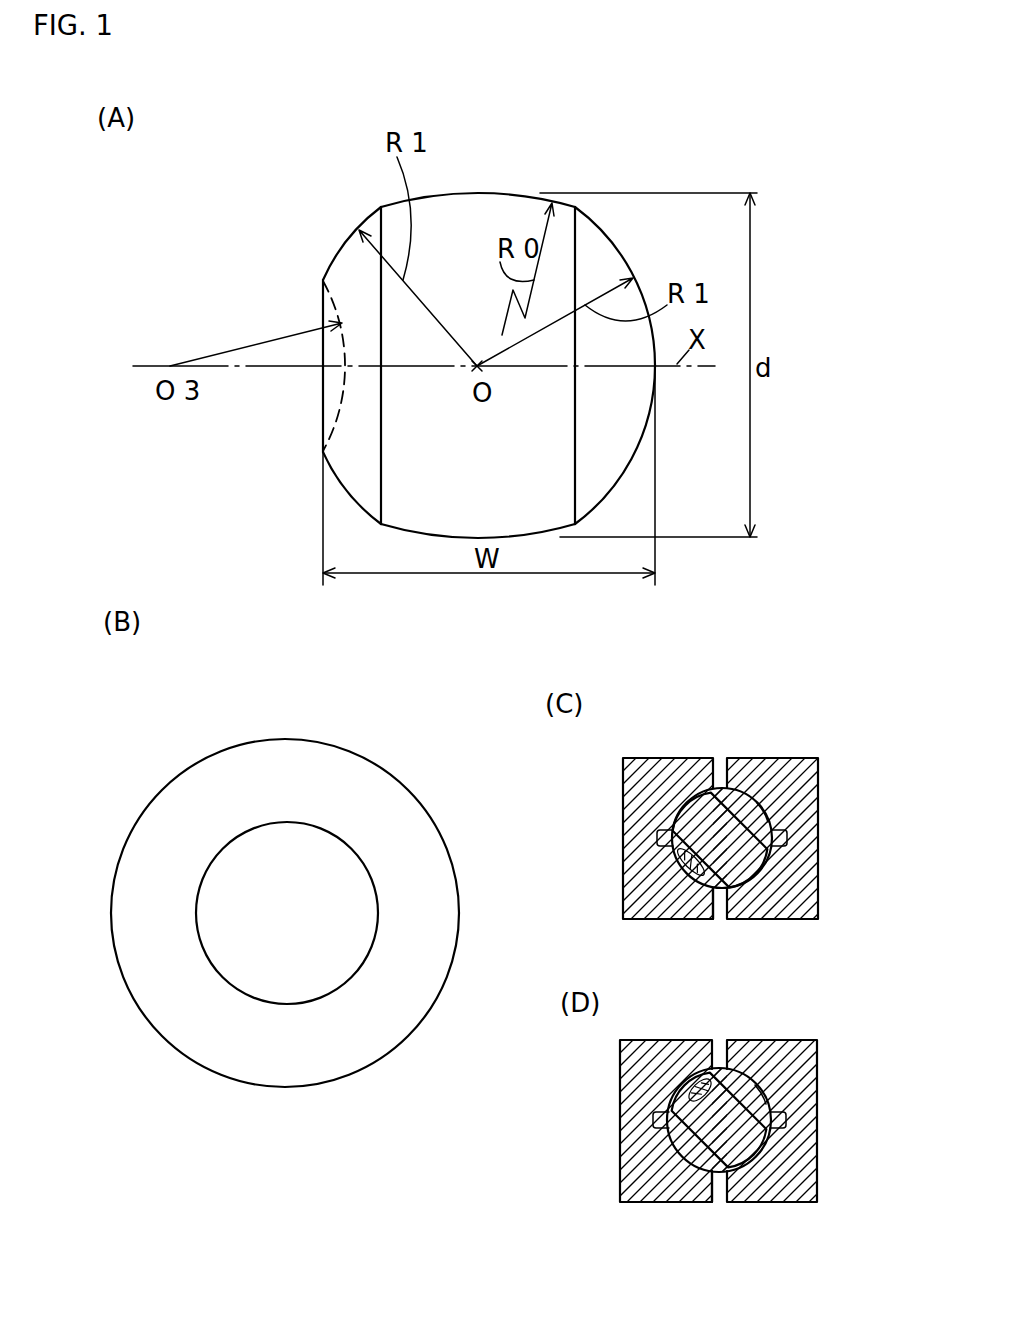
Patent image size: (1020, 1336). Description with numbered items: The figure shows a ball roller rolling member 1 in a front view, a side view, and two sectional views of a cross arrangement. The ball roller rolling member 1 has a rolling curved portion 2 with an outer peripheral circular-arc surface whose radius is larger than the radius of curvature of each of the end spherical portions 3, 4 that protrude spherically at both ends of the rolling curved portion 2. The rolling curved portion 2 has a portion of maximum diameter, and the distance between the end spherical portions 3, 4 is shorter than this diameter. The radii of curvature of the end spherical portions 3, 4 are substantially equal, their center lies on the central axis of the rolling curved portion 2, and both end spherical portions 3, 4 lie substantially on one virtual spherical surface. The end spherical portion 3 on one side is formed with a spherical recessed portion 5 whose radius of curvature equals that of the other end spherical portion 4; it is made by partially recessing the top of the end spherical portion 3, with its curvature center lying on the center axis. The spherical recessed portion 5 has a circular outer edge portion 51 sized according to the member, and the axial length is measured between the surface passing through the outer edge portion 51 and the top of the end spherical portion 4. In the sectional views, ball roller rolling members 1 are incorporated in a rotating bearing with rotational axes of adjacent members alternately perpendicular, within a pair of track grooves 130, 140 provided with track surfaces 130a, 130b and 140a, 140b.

The ball roller rolling member 1 is at (563, 169).
The rolling curved portion 2 is at (475, 192).
The end spherical portion 3 is at (340, 243).
The end spherical portion 4 is at (617, 250).
The spherical recessed portion 5 is at (343, 390).
The outer edge portion 51 is at (253, 1000).
The track groove 130 is at (707, 806).
The track surface 130a is at (672, 829).
The track surface 130b is at (707, 888).
The track groove 140 is at (767, 812).
The track surface 140a is at (763, 857).
The track surface 140b is at (772, 823).